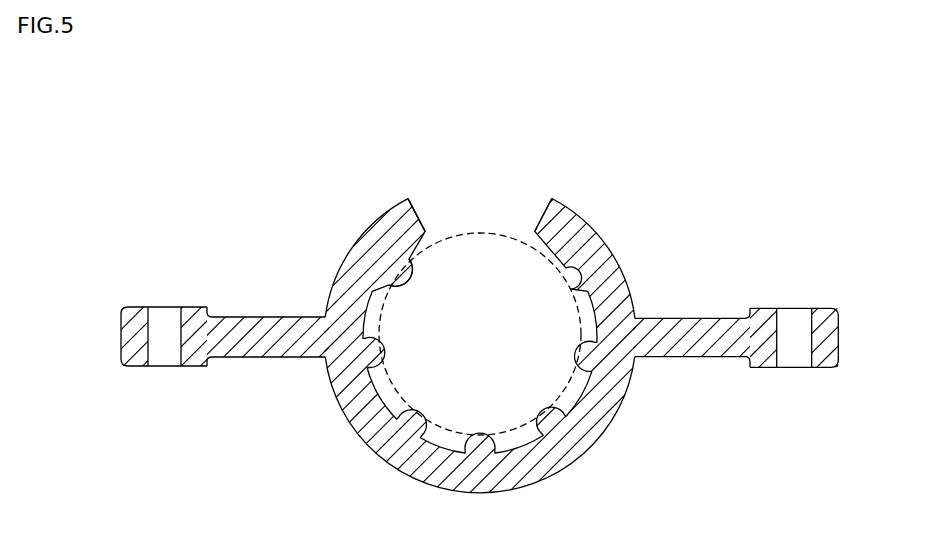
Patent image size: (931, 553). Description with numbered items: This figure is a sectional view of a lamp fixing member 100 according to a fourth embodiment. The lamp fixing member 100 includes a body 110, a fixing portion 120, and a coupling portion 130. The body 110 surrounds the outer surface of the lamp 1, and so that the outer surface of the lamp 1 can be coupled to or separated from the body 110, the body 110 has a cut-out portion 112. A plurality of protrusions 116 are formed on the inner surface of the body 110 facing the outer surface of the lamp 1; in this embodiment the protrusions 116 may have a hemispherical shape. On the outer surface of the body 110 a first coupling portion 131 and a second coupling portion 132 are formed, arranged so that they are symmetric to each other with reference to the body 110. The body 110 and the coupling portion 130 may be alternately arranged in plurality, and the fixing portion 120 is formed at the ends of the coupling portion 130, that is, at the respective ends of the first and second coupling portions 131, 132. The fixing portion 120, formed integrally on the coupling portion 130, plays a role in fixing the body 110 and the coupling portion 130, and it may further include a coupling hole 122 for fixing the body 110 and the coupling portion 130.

The lamp 1 is at (465, 232).
The lamp fixing member 100 is at (479, 303).
The body 110 is at (607, 277).
The cut-out portion 112 is at (502, 205).
The protrusions 116 is at (407, 277).
The fixing portion 120 is at (162, 318).
The coupling hole 122 is at (174, 352).
The coupling portion 130 is at (281, 298).
The first coupling portion 131 is at (698, 328).
The second coupling portion 132 is at (249, 308).